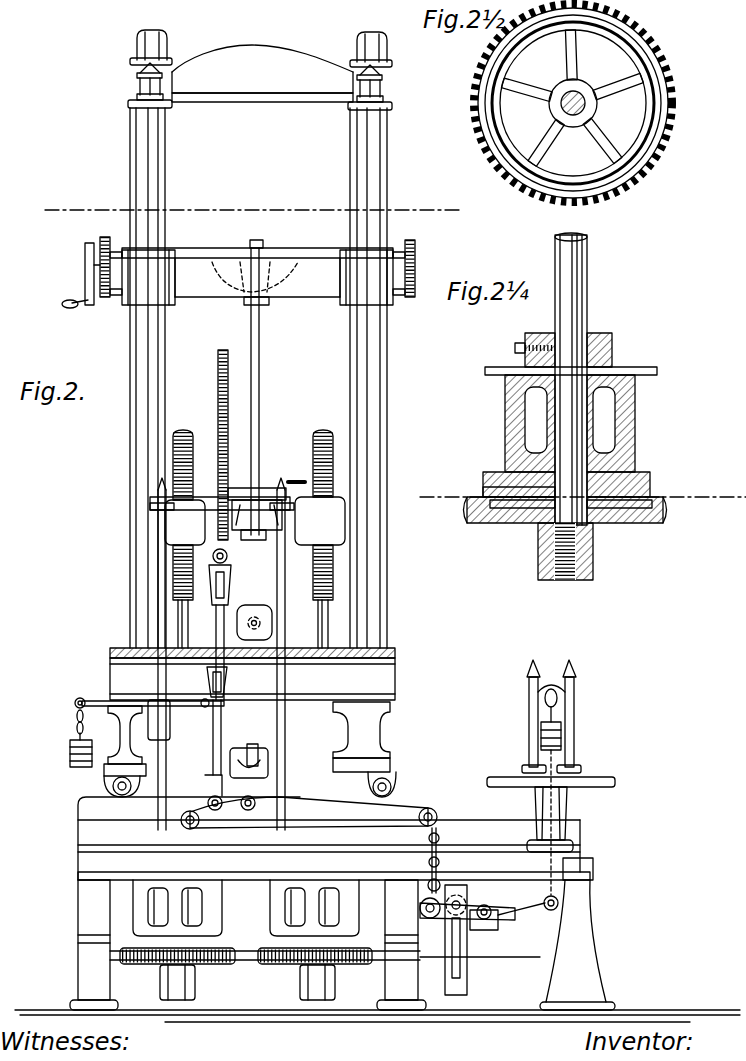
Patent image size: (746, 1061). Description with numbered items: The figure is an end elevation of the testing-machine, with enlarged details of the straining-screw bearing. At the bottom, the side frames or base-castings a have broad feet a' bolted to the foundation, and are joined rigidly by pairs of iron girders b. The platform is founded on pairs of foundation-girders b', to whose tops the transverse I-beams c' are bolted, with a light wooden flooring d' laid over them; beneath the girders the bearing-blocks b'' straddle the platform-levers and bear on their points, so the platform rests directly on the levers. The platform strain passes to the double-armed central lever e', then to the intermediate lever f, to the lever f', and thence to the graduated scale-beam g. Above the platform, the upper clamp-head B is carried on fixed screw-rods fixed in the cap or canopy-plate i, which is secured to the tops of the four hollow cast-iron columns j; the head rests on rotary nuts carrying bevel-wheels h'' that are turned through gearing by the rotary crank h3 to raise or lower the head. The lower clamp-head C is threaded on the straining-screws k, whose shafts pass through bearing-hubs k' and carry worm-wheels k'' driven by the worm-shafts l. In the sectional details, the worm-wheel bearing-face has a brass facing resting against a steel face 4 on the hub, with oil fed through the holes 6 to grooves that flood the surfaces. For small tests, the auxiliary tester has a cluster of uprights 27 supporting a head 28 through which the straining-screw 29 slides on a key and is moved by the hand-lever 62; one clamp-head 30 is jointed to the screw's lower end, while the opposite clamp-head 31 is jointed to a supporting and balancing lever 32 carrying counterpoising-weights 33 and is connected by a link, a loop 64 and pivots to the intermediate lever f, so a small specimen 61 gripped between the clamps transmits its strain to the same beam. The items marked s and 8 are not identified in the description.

In FIG. 2, the hollow cast-iron columns j is at (260, 339).
In FIG. 2, the cap or canopy-plate i is at (262, 73).
In FIG. 2, the upper clamp-head B is at (257, 272).
In FIG. 2, the bevel-wheels h'' is at (257, 283).
In FIG. 2, the rotary crank h3 is at (75, 275).
In FIG. 2, the rod s is at (261, 390).
In FIG. 2, the straining-screw 29 is at (228, 412).
In FIG. 2, the straining-screws k is at (253, 539).
The straining-screws k is at (583, 379).
In FIG. 2, the uprights or supporting-columns 27 is at (157, 672).
In FIG. 2, the head 28 is at (185, 522).
In FIG. 2, the lower clamp-head C is at (320, 521).
In FIG. 2, the hand-lever 62 is at (266, 501).
In FIG. 2, the clamp-head 30 is at (231, 575).
In FIG. 2, the small specimen 61 is at (216, 624).
In FIG. 2, the light flooring d' is at (261, 649).
In FIG. 2, the transverse I-beams c' is at (252, 679).
In FIG. 2, the clamp-head 31 is at (225, 685).
In FIG. 2, the supporting and balancing lever 32 is at (110, 702).
In FIG. 2, the counterpoising-weights 33 is at (72, 738).
In FIG. 2, the foundation-girders b' is at (249, 733).
In FIG. 2, the bearing-blocks b'' is at (250, 777).
In FIG. 2, the central lever e' is at (249, 748).
In FIG. 2, the loop 64 is at (218, 802).
In FIG. 2, the intermediate lever f is at (313, 810).
The intermediate lever f is at (539, 153).
In FIG. 2, the iron girders b is at (334, 838).
In FIG. 2, the side frames or base-castings a is at (342, 930).
In FIG. 2, the broad feet a' is at (342, 1000).
In FIG. 2, the bearing-hubs k' is at (255, 940).
The bearing-hubs k' is at (574, 419).
In FIG. 2, the worm-wheels k'' is at (246, 967).
In FIG. 2, the lever f' is at (489, 911).
In FIG. 2, the worm-shafts l is at (480, 963).
In FIG. 2, the graduated scale-beam g is at (578, 690).
The steel face 4 is at (483, 486).
The holes 6 is at (525, 362).
The window 8 is at (617, 110).